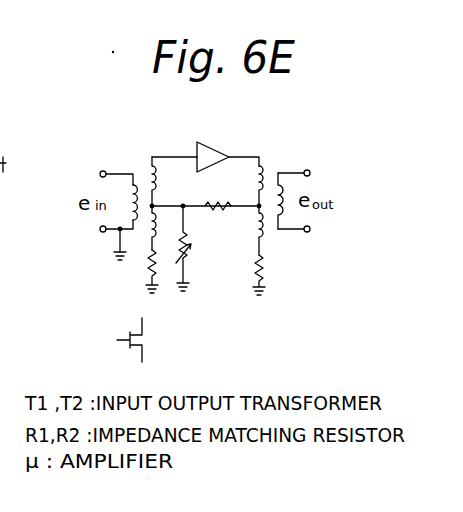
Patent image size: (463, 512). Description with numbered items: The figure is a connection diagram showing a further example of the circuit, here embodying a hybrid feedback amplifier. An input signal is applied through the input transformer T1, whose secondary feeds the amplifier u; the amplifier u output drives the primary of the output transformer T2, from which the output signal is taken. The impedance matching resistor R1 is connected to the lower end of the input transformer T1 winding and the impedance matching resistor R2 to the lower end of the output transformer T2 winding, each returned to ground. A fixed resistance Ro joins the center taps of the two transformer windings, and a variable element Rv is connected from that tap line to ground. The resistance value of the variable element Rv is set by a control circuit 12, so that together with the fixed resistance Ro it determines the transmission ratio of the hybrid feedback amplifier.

The control circuit 12 is at (99, 343).
The input transformer T1 is at (141, 200).
The output transformer T2 is at (271, 202).
The impedance matching resistor R1 is at (144, 271).
The impedance matching resistor R2 is at (270, 274).
The fixed resistance Ro is at (218, 218).
The variable element Rv is at (195, 248).
The amplifier u is at (213, 157).